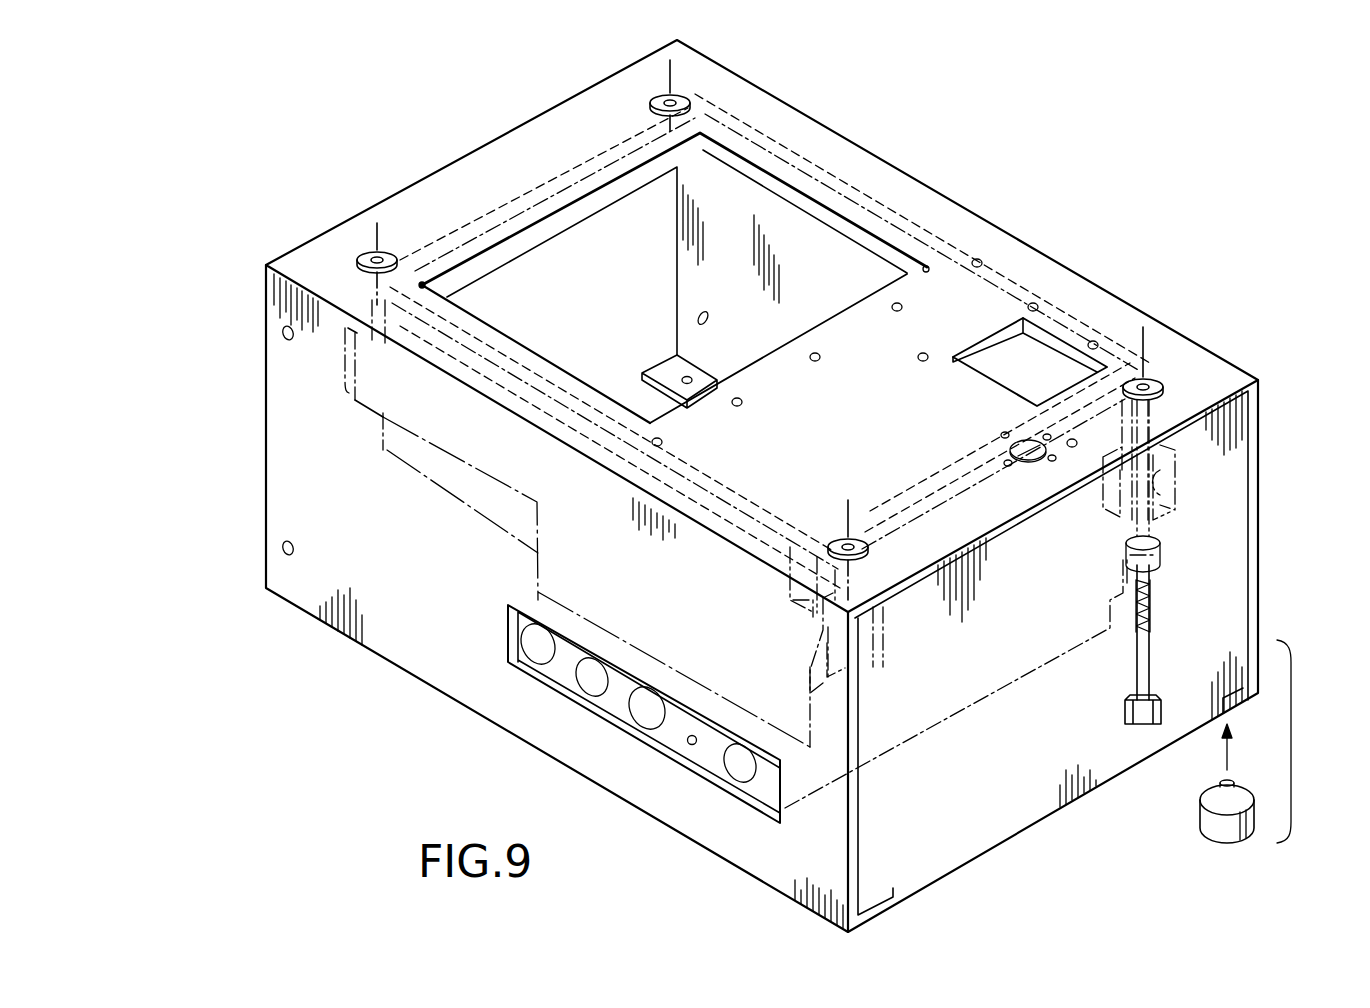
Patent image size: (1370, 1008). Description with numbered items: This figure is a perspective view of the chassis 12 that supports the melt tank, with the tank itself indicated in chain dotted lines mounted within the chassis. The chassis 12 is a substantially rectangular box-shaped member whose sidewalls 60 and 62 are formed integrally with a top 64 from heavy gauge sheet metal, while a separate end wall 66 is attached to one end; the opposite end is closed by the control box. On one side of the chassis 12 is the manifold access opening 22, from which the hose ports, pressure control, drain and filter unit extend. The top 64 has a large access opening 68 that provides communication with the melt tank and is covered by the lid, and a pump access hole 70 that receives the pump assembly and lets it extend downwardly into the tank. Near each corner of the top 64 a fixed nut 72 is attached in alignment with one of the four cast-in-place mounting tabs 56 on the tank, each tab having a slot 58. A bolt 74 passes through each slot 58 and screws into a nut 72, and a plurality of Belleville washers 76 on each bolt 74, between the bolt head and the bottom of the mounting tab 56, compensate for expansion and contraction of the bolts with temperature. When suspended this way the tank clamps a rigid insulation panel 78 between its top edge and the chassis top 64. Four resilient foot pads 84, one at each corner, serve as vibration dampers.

The chassis 12 is at (890, 132).
The manifold access opening 22 is at (548, 684).
The mounting tab 56 is at (1263, 425).
The slot 58 is at (1175, 500).
The sidewall 60 is at (318, 432).
The sidewall 62 is at (1260, 467).
The top 64 is at (918, 200).
The end wall 66 is at (1212, 602).
The access opening 68 is at (788, 190).
The pump access hole 70 is at (1053, 333).
The fixed nut 72 is at (368, 256).
The bolt 74 is at (1152, 660).
The Belleville washers 76 is at (1163, 546).
The rigid insulation panel 78 is at (758, 533).
The resilient foot pad 84 is at (1197, 816).